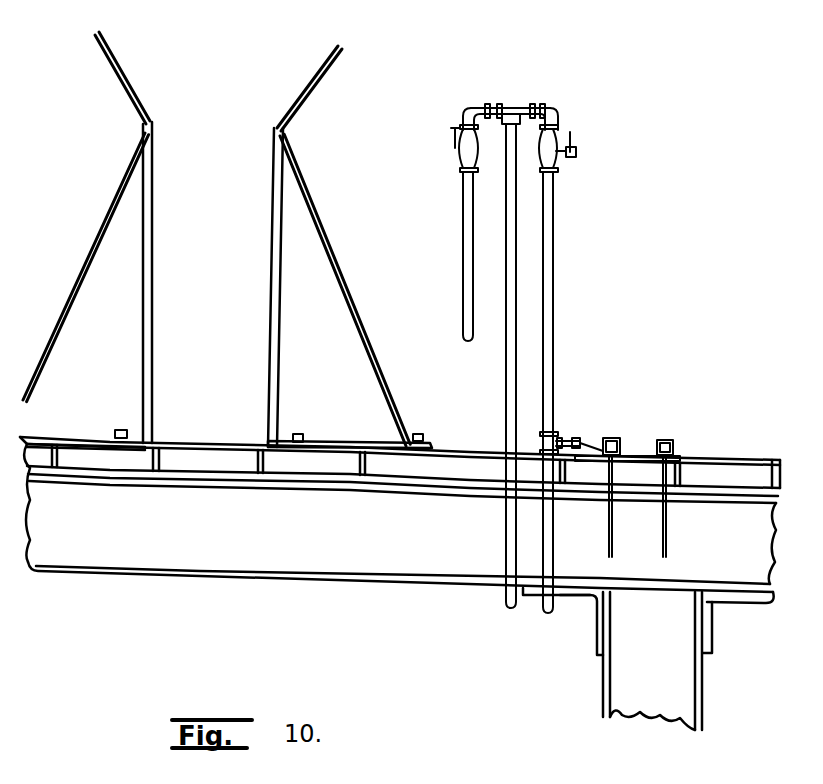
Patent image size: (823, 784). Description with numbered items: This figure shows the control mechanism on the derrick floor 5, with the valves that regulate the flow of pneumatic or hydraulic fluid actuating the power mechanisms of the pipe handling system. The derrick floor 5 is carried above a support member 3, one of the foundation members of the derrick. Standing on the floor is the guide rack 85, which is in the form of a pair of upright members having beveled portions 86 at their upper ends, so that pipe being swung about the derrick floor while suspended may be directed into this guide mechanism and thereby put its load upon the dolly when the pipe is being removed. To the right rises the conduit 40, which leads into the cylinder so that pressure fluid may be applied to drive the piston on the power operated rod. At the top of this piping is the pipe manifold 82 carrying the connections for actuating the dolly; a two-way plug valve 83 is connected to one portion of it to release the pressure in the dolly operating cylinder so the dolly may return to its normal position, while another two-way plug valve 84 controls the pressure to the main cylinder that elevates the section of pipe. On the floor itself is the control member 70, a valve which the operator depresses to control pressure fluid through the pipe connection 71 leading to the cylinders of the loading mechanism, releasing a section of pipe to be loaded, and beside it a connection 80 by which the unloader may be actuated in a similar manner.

The support member 3 is at (688, 684).
The derrick floor 5 is at (455, 456).
The conduit 40 is at (556, 332).
The control member 70 is at (607, 438).
The pipe connection 71 is at (605, 514).
The connection 80 is at (666, 440).
The pipe manifold 82 is at (510, 107).
The two-way plug valve 83 is at (455, 150).
The two-way plug valve 84 is at (578, 151).
The guide rack 85 is at (141, 82).
The beveled portion 86 is at (112, 57).